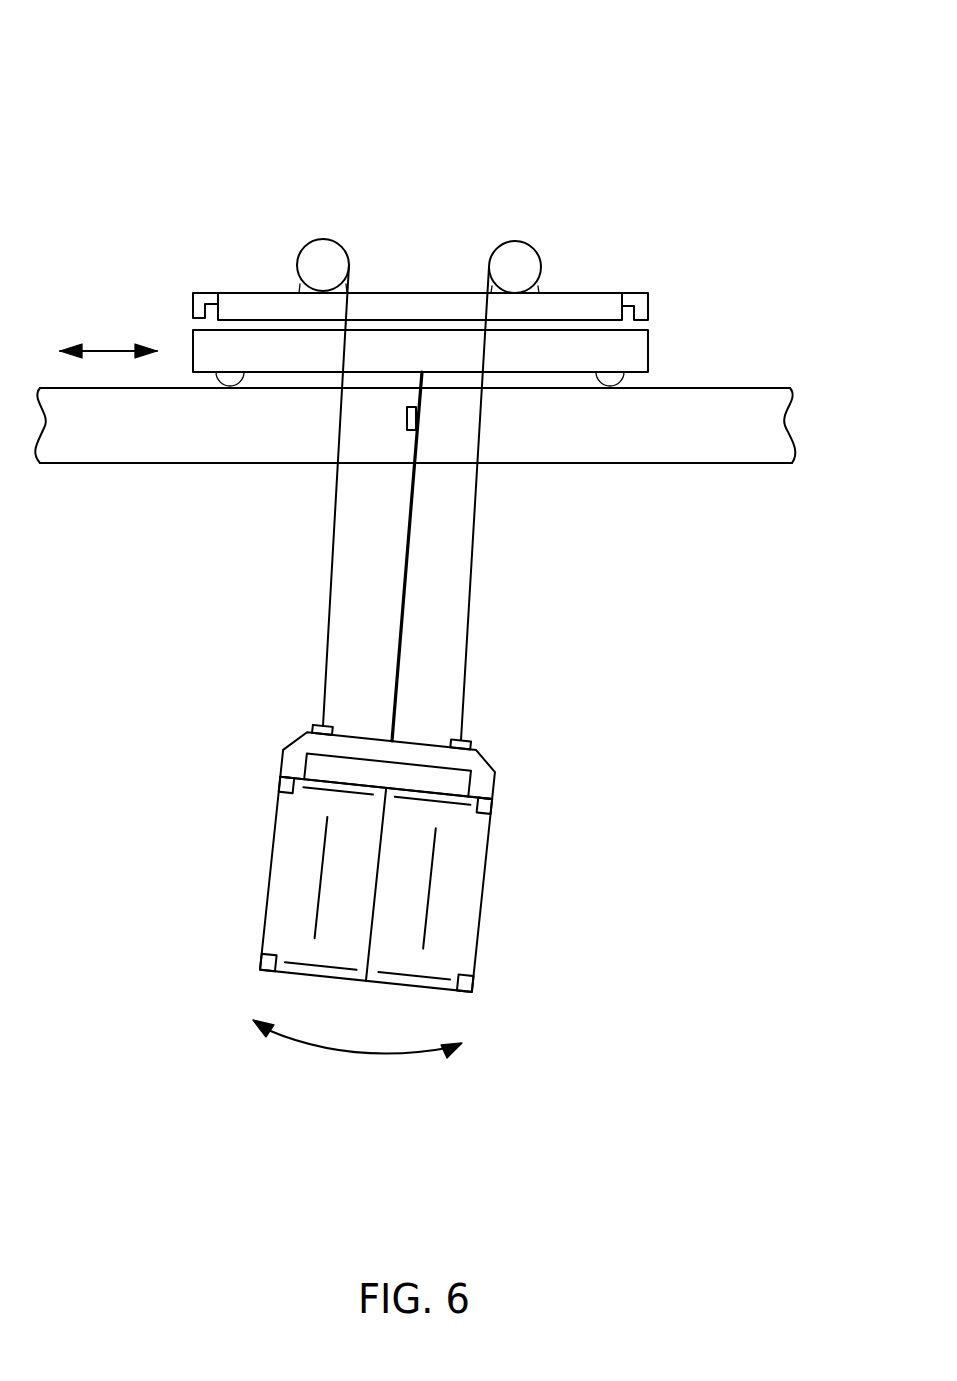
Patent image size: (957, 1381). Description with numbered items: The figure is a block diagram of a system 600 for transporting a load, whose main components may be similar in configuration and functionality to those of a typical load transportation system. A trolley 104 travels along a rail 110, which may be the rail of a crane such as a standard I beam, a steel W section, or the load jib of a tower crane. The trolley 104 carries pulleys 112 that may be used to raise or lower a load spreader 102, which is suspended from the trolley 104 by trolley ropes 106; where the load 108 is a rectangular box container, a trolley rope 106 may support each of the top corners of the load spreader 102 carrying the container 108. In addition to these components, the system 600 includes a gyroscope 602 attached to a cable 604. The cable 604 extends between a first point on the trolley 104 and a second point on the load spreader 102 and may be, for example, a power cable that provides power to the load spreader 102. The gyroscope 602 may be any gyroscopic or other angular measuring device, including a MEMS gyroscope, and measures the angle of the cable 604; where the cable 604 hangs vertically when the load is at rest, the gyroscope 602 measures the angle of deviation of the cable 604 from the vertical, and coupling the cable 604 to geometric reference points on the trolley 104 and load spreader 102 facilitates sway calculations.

The system for transporting a load 600 is at (112, 58).
The load spreader 102 is at (487, 758).
The trolley 104 is at (648, 352).
The trolley ropes 106 is at (333, 556).
The load 108 is at (505, 798).
The rail 110 is at (97, 463).
The pulleys 112 is at (300, 253).
The gyroscope 602 is at (407, 429).
The cable 604 is at (410, 558).